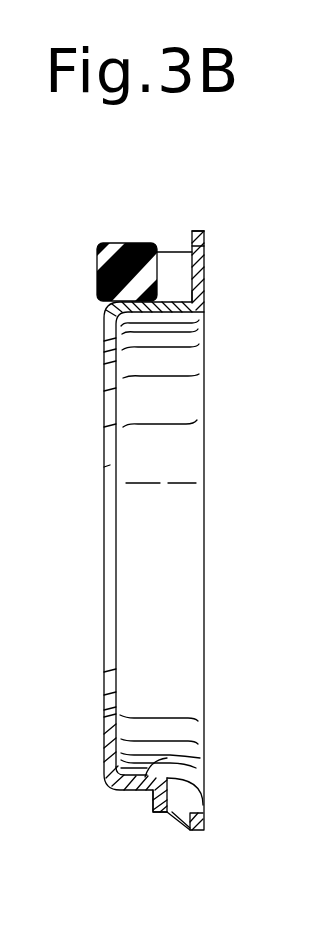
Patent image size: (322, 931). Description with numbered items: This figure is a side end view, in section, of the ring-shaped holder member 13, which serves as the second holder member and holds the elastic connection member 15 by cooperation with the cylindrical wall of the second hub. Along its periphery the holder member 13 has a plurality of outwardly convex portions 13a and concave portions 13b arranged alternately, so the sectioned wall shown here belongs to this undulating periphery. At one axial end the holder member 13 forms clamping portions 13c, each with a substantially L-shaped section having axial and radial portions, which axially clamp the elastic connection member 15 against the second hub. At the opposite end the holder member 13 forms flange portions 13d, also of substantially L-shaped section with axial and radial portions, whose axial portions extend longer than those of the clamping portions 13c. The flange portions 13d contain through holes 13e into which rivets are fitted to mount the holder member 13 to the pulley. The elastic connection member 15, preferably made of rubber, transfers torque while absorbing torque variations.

The holder member 13 is at (220, 349).
The outwardly convex portion 13a is at (200, 758).
The concave portion 13b is at (152, 312).
The clamping portion 13c is at (153, 797).
The flange portion 13d is at (204, 231).
The through hole 13e is at (204, 262).
The elastic connection member 15 is at (100, 264).